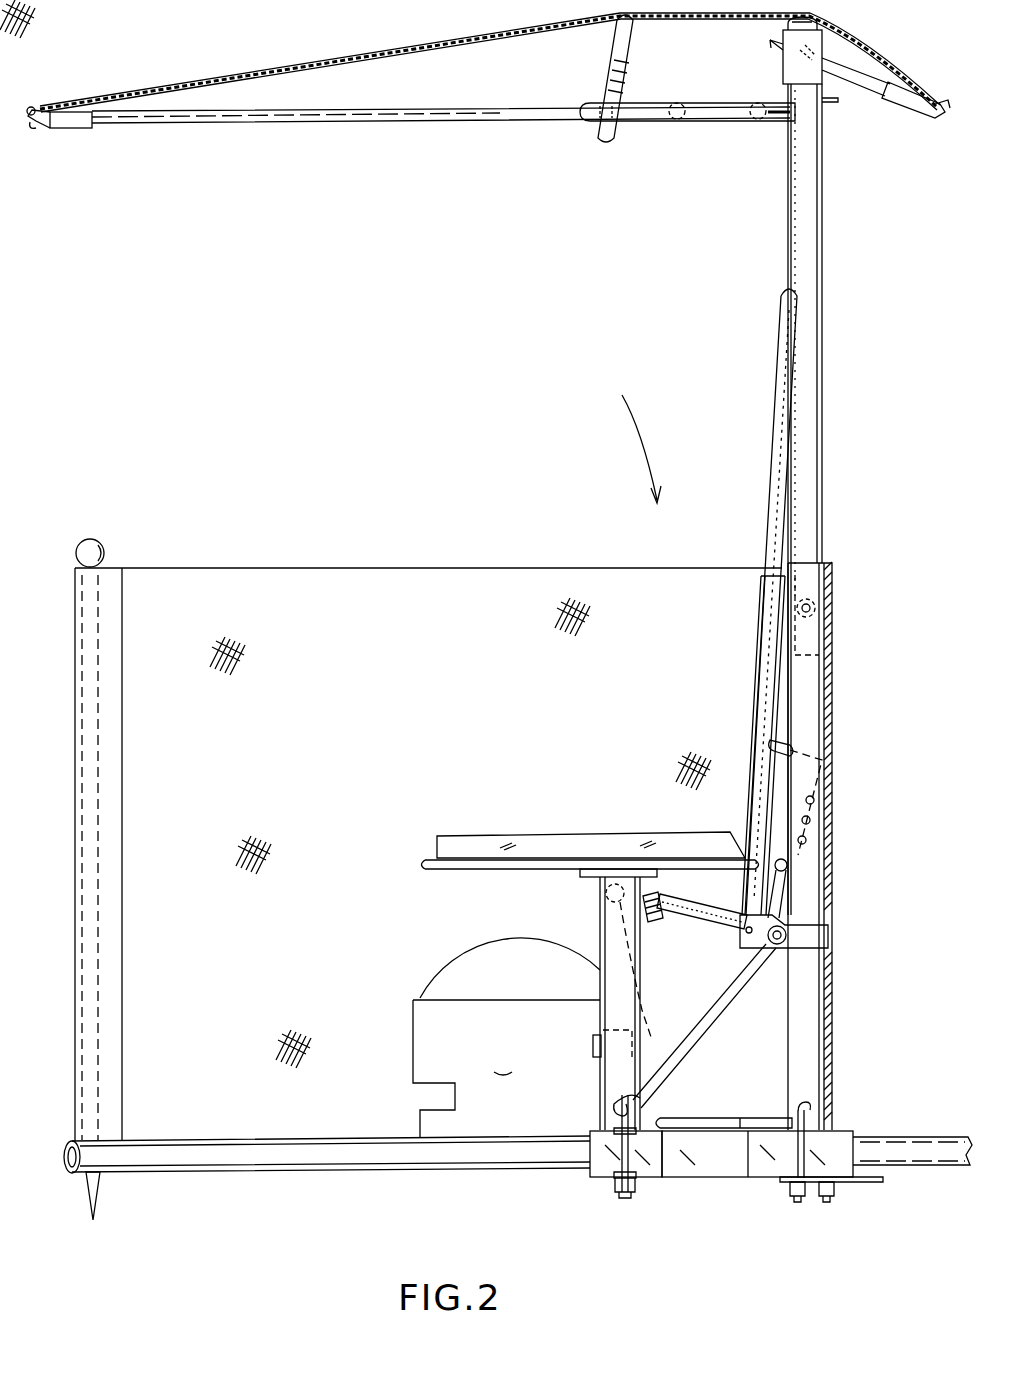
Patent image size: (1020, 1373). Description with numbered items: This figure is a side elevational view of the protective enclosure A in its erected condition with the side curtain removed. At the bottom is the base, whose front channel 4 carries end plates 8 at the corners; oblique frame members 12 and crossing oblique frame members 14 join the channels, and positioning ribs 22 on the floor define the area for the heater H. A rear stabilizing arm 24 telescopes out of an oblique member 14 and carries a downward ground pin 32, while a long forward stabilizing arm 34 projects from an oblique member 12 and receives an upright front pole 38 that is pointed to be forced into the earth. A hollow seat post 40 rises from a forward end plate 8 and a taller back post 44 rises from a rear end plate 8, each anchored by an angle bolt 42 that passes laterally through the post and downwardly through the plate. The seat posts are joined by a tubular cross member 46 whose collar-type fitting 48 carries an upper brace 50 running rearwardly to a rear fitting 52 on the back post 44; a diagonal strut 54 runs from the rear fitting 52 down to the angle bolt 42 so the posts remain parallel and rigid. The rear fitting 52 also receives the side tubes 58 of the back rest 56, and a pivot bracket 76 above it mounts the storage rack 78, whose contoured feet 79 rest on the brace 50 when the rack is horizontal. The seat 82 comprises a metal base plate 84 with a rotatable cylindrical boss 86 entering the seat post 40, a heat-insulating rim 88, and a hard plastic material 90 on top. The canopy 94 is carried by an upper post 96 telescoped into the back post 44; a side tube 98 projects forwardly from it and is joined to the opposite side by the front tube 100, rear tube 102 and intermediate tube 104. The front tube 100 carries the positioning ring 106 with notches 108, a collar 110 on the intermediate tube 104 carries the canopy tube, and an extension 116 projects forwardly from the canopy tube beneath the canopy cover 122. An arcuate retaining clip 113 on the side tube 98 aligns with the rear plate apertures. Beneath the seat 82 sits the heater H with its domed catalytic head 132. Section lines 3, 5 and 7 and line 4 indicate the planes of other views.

The section line 3- 3 is at (985, 950).
The front channel 4 is at (898, 1255).
The section line 5- 5 is at (516, 17).
The section line 7- 7 is at (870, 808).
The end plate 8 is at (625, 1180).
The oblique frame member 12 is at (695, 1178).
The crossing oblique frame member 14 is at (765, 1178).
The positioning rib 22 is at (745, 1120).
The rear stabilizing arm 24 is at (918, 1140).
The ground pin 32 is at (970, 1168).
The forward stabilizing arm 34 is at (218, 1168).
The upright front pole 38 is at (104, 552).
The seat post 40 is at (610, 1065).
The angle bolt 42 is at (638, 1112).
The back post 44 is at (818, 1030).
The tubular cross member 46 is at (605, 885).
The collar-type fitting 48 is at (662, 893).
The upper brace 50 is at (695, 915).
The rear fitting 52 is at (822, 938).
The diagonal strut 54 is at (725, 1000).
The back rest 56 is at (748, 672).
The side tube 58 is at (773, 505).
The pivot bracket 76 is at (790, 868).
The storage rack 78 is at (822, 833).
The contoured foot 79 is at (772, 745).
The seat 82 is at (628, 818).
The metal base plate 84 is at (595, 873).
The cylindrical boss 86 is at (630, 970).
The rim 88 is at (440, 870).
The hard plastic material 90 is at (565, 835).
The canopy 94 is at (470, 120).
The upper post 96 is at (803, 410).
The side tube 98 is at (652, 122).
The front tube 100 is at (606, 142).
The rear tube 102 is at (744, 120).
The intermediate tube 104 is at (678, 103).
The positioning ring 106 is at (617, 50).
The notch 108 is at (613, 78).
The collar 110 is at (860, 67).
The arcuate retaining clip 113 is at (778, 124).
The extension 116 is at (236, 118).
The canopy cover 122 is at (302, 63).
The domed head 132 is at (450, 968).
The protective enclosure A is at (631, 432).
The heater H is at (506, 1068).